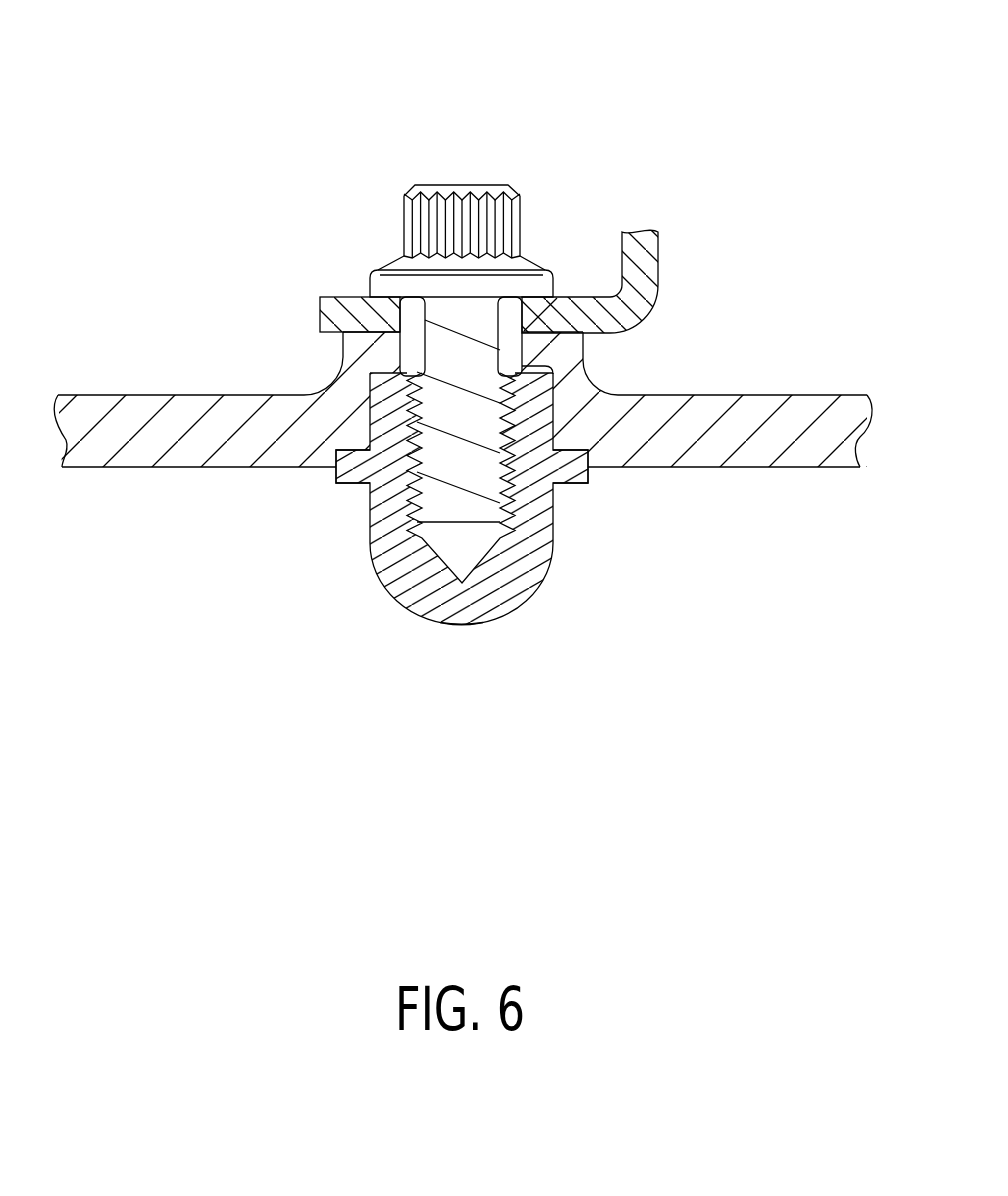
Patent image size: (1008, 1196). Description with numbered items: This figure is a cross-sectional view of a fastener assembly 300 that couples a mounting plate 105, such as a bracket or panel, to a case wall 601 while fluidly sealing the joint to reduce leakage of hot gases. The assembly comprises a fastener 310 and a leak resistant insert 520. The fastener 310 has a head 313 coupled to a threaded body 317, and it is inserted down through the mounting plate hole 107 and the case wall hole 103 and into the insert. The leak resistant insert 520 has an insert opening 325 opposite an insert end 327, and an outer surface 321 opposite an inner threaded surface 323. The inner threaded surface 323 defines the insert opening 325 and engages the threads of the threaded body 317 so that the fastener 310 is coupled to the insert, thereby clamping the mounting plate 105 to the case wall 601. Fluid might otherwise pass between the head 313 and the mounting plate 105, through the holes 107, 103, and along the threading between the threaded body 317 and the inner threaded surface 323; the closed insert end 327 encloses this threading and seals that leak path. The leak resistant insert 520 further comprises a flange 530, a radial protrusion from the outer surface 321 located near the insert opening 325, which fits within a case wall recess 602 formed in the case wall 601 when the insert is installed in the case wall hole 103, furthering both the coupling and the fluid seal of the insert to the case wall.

The fastener assembly 300 is at (468, 369).
The fastener 310 is at (451, 213).
The head 313 is at (520, 262).
The mounting plate 105 is at (652, 268).
The mounting plate hole 107 is at (400, 320).
The case wall hole 103 is at (400, 357).
The insert opening 325 is at (532, 366).
The flange 530 is at (355, 485).
The case wall recess 602 is at (590, 456).
The case wall 601 is at (733, 457).
The inner threaded surface 323 is at (415, 537).
The threaded body 317 is at (490, 495).
The outer surface 321 is at (407, 612).
The insert end 327 is at (463, 625).
The leak resistant insert 520 is at (468, 508).